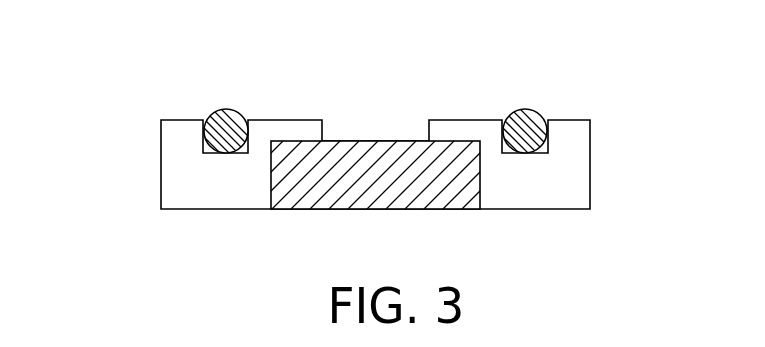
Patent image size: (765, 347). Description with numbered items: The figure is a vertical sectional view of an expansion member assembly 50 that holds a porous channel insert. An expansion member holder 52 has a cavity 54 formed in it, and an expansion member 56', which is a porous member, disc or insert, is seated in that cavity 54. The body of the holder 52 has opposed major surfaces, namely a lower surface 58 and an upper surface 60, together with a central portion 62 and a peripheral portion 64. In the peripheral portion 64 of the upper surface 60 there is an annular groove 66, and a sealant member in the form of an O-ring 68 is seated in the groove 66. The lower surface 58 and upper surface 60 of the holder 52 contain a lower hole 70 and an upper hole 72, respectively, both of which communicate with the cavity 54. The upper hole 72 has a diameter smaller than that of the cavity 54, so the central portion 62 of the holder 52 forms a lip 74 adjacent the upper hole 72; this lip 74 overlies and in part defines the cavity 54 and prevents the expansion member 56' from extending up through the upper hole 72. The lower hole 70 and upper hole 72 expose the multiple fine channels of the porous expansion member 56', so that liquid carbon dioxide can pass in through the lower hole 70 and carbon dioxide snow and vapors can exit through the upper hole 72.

The bead / ball member 50 is at (190, 88).
The expansion member holder 52 is at (148, 164).
The cavity 54 is at (270, 183).
The expansion member 56' is at (344, 198).
The lower surface 58 is at (560, 210).
The upper surface 60 is at (583, 121).
The central portion 62 is at (470, 122).
The peripheral portion 64 is at (582, 190).
The annular groove 66 is at (548, 150).
The O-ring 68 is at (520, 112).
The lower hole 70 is at (477, 207).
The upper hole 72 is at (428, 127).
The lip 74 is at (284, 122).